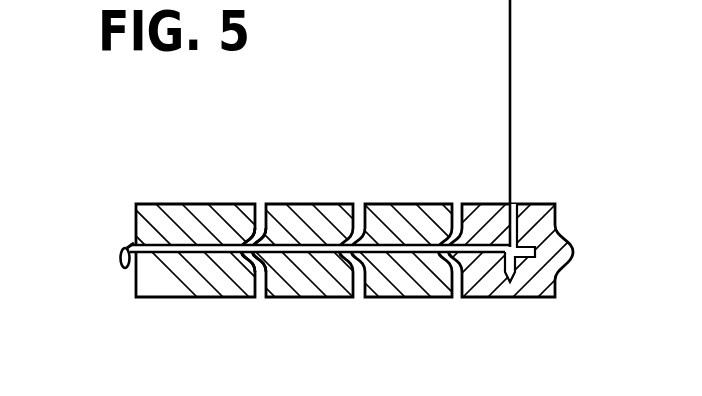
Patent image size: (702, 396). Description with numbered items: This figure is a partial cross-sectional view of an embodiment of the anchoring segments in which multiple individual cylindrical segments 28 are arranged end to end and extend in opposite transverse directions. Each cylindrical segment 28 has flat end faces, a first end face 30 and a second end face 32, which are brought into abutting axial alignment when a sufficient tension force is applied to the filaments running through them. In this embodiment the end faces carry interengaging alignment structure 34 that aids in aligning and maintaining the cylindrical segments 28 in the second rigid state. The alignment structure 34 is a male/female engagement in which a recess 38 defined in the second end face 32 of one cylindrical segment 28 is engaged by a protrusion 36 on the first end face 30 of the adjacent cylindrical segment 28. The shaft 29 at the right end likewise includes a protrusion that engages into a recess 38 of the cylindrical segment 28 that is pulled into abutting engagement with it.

The cylindrical segment 28 is at (180, 285).
The end segment block 29 is at (572, 243).
The first end face 30 is at (137, 218).
The second end face 32 is at (236, 282).
The alignment structure 34 is at (253, 160).
The protrusion 36 is at (288, 220).
The recess 38 is at (250, 223).